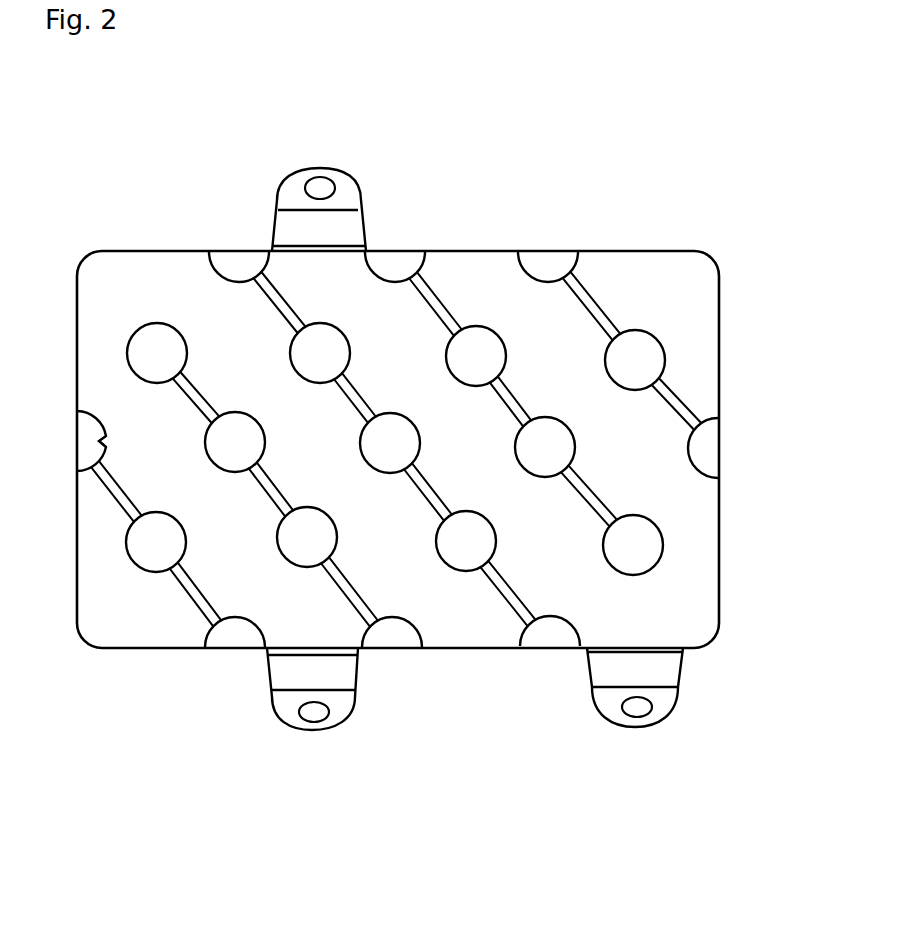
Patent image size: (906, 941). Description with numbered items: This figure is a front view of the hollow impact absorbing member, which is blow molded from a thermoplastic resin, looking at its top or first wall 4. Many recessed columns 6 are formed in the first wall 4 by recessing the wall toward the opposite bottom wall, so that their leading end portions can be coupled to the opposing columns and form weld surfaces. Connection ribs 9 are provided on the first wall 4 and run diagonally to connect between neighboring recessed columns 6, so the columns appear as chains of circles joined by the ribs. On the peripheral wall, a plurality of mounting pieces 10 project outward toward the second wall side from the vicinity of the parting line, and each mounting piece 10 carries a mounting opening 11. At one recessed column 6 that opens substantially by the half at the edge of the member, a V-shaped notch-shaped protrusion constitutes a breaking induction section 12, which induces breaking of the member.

The first wall 4 is at (698, 530).
The recessed columns 6 is at (640, 355).
The connection ribs 9 is at (450, 302).
The mounting pieces 10 is at (343, 200).
The mounting openings 11 is at (318, 187).
The breaking induction section 12 is at (97, 445).